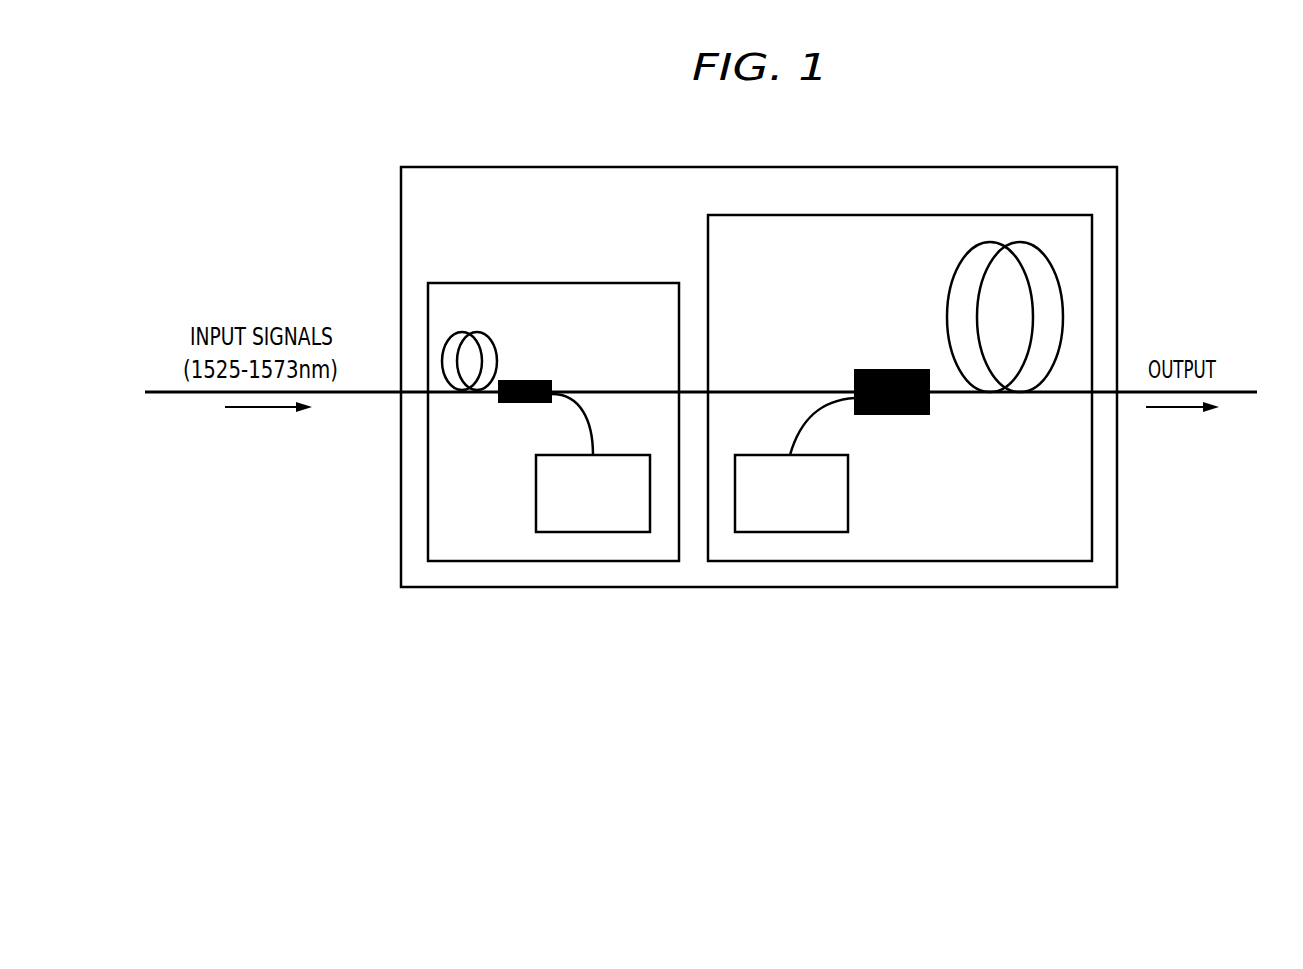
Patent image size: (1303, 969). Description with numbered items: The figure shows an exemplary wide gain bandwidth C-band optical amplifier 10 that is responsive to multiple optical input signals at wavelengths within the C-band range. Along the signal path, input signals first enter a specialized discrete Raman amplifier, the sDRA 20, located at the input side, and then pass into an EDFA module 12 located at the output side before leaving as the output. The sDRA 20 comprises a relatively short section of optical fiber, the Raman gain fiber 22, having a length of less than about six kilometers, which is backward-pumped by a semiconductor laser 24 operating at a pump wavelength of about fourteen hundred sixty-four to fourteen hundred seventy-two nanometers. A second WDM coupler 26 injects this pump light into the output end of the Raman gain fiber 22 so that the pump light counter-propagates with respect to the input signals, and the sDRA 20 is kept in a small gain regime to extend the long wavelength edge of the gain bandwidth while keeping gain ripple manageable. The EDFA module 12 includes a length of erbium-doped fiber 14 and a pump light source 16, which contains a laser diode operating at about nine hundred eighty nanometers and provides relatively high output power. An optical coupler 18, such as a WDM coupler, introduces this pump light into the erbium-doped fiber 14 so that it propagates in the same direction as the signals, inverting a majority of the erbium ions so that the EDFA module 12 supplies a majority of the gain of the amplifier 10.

The C-band optical amplifier 10 is at (1004, 133).
The EDFA module 12 is at (772, 215).
The erbium-doped fiber 14 is at (957, 268).
The pump light source 16 is at (766, 455).
The optical coupler 18 is at (866, 369).
The specialized discrete Raman amplifier (sDRA) 20 is at (600, 283).
The Raman gain fiber 22 is at (483, 334).
The semiconductor laser 24 is at (536, 494).
The second WDM coupler 26 is at (552, 379).